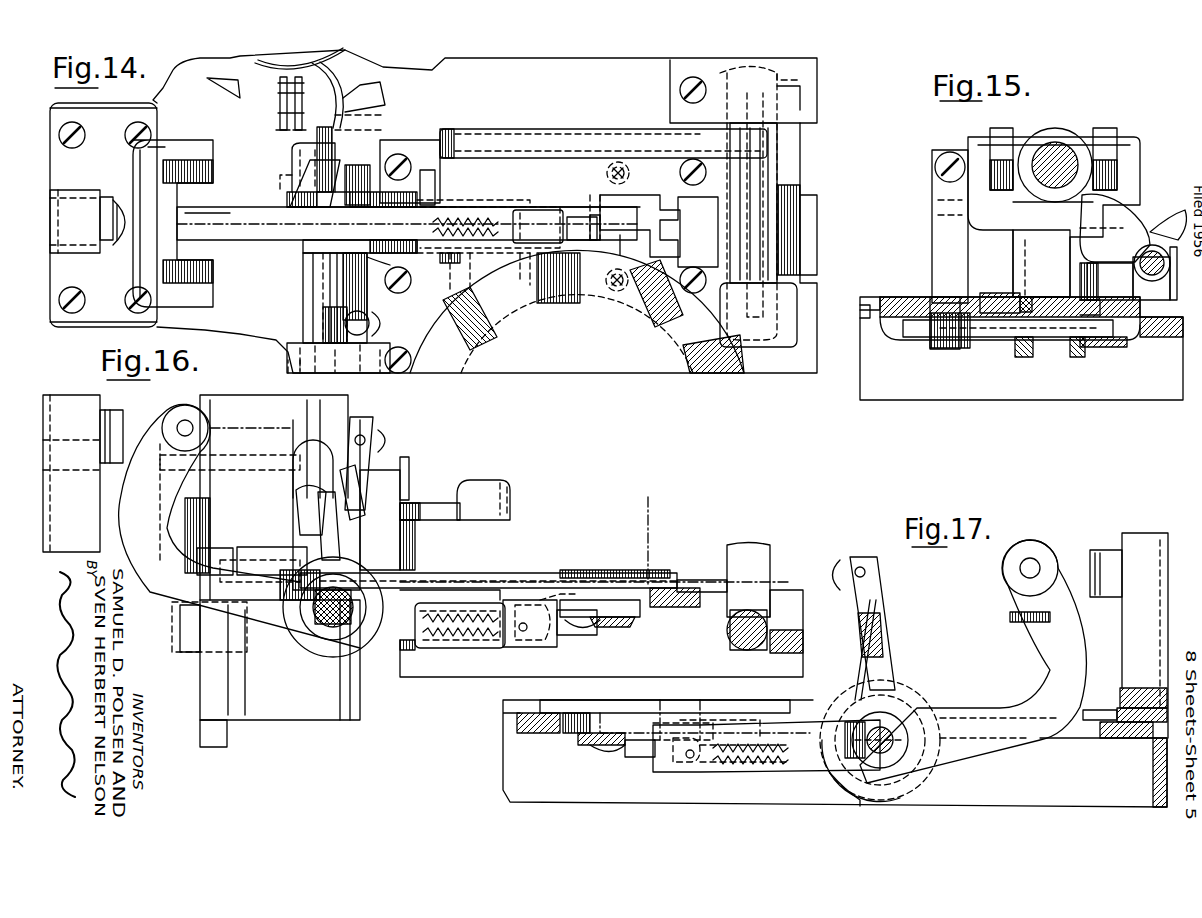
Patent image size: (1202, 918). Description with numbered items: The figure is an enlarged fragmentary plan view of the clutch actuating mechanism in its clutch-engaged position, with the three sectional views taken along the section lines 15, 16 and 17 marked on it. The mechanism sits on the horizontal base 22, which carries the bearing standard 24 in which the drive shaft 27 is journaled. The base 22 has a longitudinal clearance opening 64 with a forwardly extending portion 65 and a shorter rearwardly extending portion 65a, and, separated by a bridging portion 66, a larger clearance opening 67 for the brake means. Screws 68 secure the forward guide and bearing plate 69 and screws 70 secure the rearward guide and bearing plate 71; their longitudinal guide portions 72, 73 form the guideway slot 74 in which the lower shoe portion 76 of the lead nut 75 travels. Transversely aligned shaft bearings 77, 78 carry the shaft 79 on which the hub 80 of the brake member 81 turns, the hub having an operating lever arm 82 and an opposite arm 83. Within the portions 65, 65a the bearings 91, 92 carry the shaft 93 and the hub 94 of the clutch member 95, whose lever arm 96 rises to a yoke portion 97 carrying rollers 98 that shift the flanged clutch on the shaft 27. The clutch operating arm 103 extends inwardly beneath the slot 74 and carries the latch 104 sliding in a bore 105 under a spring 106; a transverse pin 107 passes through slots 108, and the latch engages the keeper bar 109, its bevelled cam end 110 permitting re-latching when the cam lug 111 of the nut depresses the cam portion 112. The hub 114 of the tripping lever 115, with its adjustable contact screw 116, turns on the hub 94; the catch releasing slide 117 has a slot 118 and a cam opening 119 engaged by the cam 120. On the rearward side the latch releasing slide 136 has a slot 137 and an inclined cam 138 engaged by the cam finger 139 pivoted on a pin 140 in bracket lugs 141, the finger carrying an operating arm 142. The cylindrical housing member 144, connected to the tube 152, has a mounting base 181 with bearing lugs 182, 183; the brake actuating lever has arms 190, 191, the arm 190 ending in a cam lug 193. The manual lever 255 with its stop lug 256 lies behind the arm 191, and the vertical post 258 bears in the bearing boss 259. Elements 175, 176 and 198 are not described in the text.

In FIG. 14, the section line 15— 15 is at (340, 117).
In FIG. 14, the section line 16— 16 is at (40, 252).
In FIG. 14, the section line 17— 17 is at (40, 190).
In FIG. 14, the base 22 is at (808, 106).
In FIG. 15, the base 22 is at (860, 320).
In FIG. 16, the base 22 is at (790, 615).
In FIG. 17, the base 22 is at (1115, 738).
In FIG. 14, the bearing standard 24 is at (62, 188).
In FIG. 15, the bearing standard 24 is at (1050, 130).
In FIG. 16, the bearing standard 24 is at (56, 395).
In FIG. 17, the bearing standard 24 is at (1140, 533).
In FIG. 14, the drive shaft 27 is at (108, 195).
In FIG. 15, the drive shaft 27 is at (1065, 142).
In FIG. 16, the drive shaft 27 is at (118, 420).
In FIG. 17, the drive shaft 27 is at (1100, 550).
In FIG. 14, the clearance opening 64 is at (290, 265).
In FIG. 16, the clearance opening 64 is at (642, 610).
In FIG. 14, the forwardly extending portion 65 is at (295, 334).
In FIG. 15, the forwardly extending portion 65 is at (866, 338).
In FIG. 14, the rearwardly extending portion 65a is at (290, 170).
In FIG. 15, the rearwardly extending portion 65a is at (1168, 338).
In FIG. 14, the bridging portion 66 is at (695, 232).
In FIG. 16, the bridging portion 66 is at (688, 608).
In FIG. 17, the bridging portion 66 is at (535, 733).
In FIG. 14, the clearance opening 67 is at (805, 130).
In FIG. 16, the clearance opening 67 is at (706, 578).
In FIG. 14, the screws 68 is at (412, 280).
In FIG. 14, the forward guide and bearing plate 69 is at (478, 275).
In FIG. 15, the forward guide and bearing plate 69 is at (868, 297).
In FIG. 17, the forward guide and bearing plate 69 is at (622, 700).
In FIG. 14, the screws 70 is at (455, 178).
In FIG. 14, the rearward guide and bearing plate 71 is at (432, 140).
In FIG. 15, the rearward guide and bearing plate 71 is at (1176, 275).
In FIG. 16, the rearward guide and bearing plate 71 is at (488, 573).
In FIG. 14, the longitudinal guide portion 72 is at (622, 250).
In FIG. 17, the longitudinal guide portion 72 is at (672, 710).
In FIG. 14, the longitudinal guide portion 73 is at (680, 210).
In FIG. 16, the longitudinal guide portion 73 is at (530, 572).
In FIG. 14, the guideway slot 74 is at (594, 214).
In FIG. 16, the lead nut 75 is at (648, 498).
In FIG. 16, the lower shoe portion 76 is at (602, 578).
In FIG. 14, the shaft bearing 77 is at (798, 305).
In FIG. 14, the shaft bearing 78 is at (760, 70).
In FIG. 14, the shaft 79 is at (780, 166).
In FIG. 16, the shaft 79 is at (735, 642).
In FIG. 14, the hub 80 is at (803, 183).
In FIG. 16, the hub 80 is at (748, 652).
In FIG. 14, the brake member 81 is at (659, 121).
In FIG. 16, the brake member 81 is at (779, 562).
In FIG. 14, the operating lever arm 82 is at (590, 129).
In FIG. 16, the operating lever arm 82 is at (752, 546).
In FIG. 14, the arm 83 is at (818, 233).
In FIG. 16, the arm 83 is at (782, 654).
In FIG. 14, the shaft bearing 91 is at (290, 366).
In FIG. 15, the shaft bearing 91 is at (900, 340).
In FIG. 14, the shaft bearing 92 is at (292, 147).
In FIG. 15, the shaft bearing 92 is at (1118, 347).
In FIG. 14, the shaft 93 is at (303, 288).
In FIG. 15, the shaft 93 is at (1005, 340).
In FIG. 16, the shaft 93 is at (318, 630).
In FIG. 17, the shaft 93 is at (892, 752).
In FIG. 14, the hub 94 is at (303, 304).
In FIG. 15, the hub 94 is at (972, 350).
In FIG. 16, the hub 94 is at (325, 640).
In FIG. 17, the hub 94 is at (905, 745).
In FIG. 14, the clutch member 95 is at (261, 194).
In FIG. 15, the clutch member 95 is at (1018, 272).
In FIG. 16, the clutch member 95 is at (234, 630).
In FIG. 17, the clutch member 95 is at (996, 694).
In FIG. 14, the lever arm 96 is at (243, 234).
In FIG. 15, the lever arm 96 is at (1040, 248).
In FIG. 16, the lever arm 96 is at (175, 598).
In FIG. 17, the lever arm 96 is at (1048, 682).
In FIG. 14, the yoke portion 97 is at (208, 300).
In FIG. 15, the yoke portion 97 is at (972, 140).
In FIG. 16, the yoke portion 97 is at (176, 484).
In FIG. 17, the yoke portion 97 is at (1035, 610).
In FIG. 14, the rollers 98 is at (214, 171).
In FIG. 15, the rollers 98 is at (1000, 128).
In FIG. 16, the rollers 98 is at (210, 433).
In FIG. 17, the rollers 98 is at (1010, 588).
In FIG. 14, the clutch operating arm 103 is at (445, 210).
In FIG. 16, the clutch operating arm 103 is at (445, 650).
In FIG. 17, the clutch operating arm 103 is at (663, 775).
In FIG. 14, the latch 104 is at (570, 216).
In FIG. 16, the latch 104 is at (585, 636).
In FIG. 17, the latch 104 is at (640, 760).
In FIG. 14, the bore 105 is at (432, 222).
In FIG. 16, the bore 105 is at (545, 640).
In FIG. 17, the bore 105 is at (765, 770).
In FIG. 14, the spring 106 is at (432, 232).
In FIG. 16, the spring 106 is at (472, 648).
In FIG. 17, the spring 106 is at (808, 770).
In FIG. 14, the transverse pin 107 is at (548, 212).
In FIG. 16, the transverse pin 107 is at (523, 632).
In FIG. 17, the transverse pin 107 is at (692, 760).
In FIG. 14, the slots 108 is at (505, 207).
In FIG. 16, the slots 108 is at (500, 642).
In FIG. 17, the slots 108 is at (715, 790).
In FIG. 14, the keeper bar 109 is at (590, 190).
In FIG. 16, the keeper bar 109 is at (628, 628).
In FIG. 17, the keeper bar 109 is at (580, 745).
In FIG. 16, the bevelled cam end 110 is at (585, 630).
In FIG. 17, the bevelled cam end 110 is at (615, 758).
In FIG. 16, the cam lug 111 is at (569, 597).
In FIG. 17, the cam lug 111 is at (736, 712).
In FIG. 14, the cam portion 112 is at (530, 263).
In FIG. 16, the cam portion 112 is at (508, 602).
In FIG. 17, the cam portion 112 is at (720, 727).
In FIG. 14, the hub 114 is at (365, 300).
In FIG. 15, the hub 114 is at (948, 350).
In FIG. 16, the hub 114 is at (300, 613).
In FIG. 14, the tripping lever 115 is at (372, 338).
In FIG. 15, the tripping lever 115 is at (936, 253).
In FIG. 16, the tripping lever 115 is at (375, 425).
In FIG. 17, the tripping lever 115 is at (872, 594).
In FIG. 14, the adjustable contact screw 116 is at (388, 320).
In FIG. 15, the adjustable contact screw 116 is at (938, 175).
In FIG. 16, the adjustable contact screw 116 is at (392, 440).
In FIG. 17, the adjustable contact screw 116 is at (835, 568).
In FIG. 14, the catch releasing slide 117 is at (450, 262).
In FIG. 15, the catch releasing slide 117 is at (1028, 357).
In FIG. 16, the catch releasing slide 117 is at (410, 650).
In FIG. 17, the catch releasing slide 117 is at (860, 806).
In FIG. 15, the slot 118 is at (1070, 357).
In FIG. 16, the slot 118 is at (292, 592).
In FIG. 16, the cam opening 119 is at (400, 560).
In FIG. 14, the cam 120 is at (362, 215).
In FIG. 16, the cam 120 is at (414, 540).
In FIG. 14, the latch releasing slide 136 is at (430, 190).
In FIG. 15, the latch releasing slide 136 is at (1078, 400).
In FIG. 17, the latch releasing slide 136 is at (838, 790).
In FIG. 15, the slot 137 is at (1085, 350).
In FIG. 17, the slot 137 is at (910, 745).
In FIG. 14, the inclined cam 138 is at (378, 165).
In FIG. 15, the inclined cam 138 is at (1095, 286).
In FIG. 16, the inclined cam 138 is at (290, 548).
In FIG. 17, the inclined cam 138 is at (880, 665).
In FIG. 14, the cam finger 139 is at (310, 200).
In FIG. 15, the cam finger 139 is at (1120, 212).
In FIG. 16, the cam finger 139 is at (368, 512).
In FIG. 17, the cam finger 139 is at (860, 633).
In FIG. 14, the pin 140 is at (400, 110).
In FIG. 15, the pin 140 is at (1152, 281).
In FIG. 14, the bracket lugs 141 is at (390, 92).
In FIG. 15, the bracket lugs 141 is at (1170, 270).
In FIG. 16, the bracket lugs 141 is at (440, 521).
In FIG. 14, the operating arm 142 is at (280, 105).
In FIG. 15, the operating arm 142 is at (1165, 232).
In FIG. 16, the operating arm 142 is at (296, 493).
In FIG. 16, the cylindrical housing member 144 is at (232, 393).
In FIG. 16, the cylindrical tube 152 is at (360, 700).
In FIG. 14, the arc guide 175 is at (642, 372).
In FIG. 14, the pad 176 is at (568, 300).
In FIG. 16, the mounting base 181 is at (158, 540).
In FIG. 16, the bearing lug 182 is at (412, 462).
In FIG. 16, the bearing lug 183 is at (160, 440).
In FIG. 16, the arm 190 is at (462, 482).
In FIG. 16, the arm 191 is at (250, 570).
In FIG. 16, the cam lug 193 is at (512, 486).
In FIG. 16, the housing 198 is at (311, 505).
In FIG. 16, the lever 255 is at (235, 547).
In FIG. 16, the stop lug 256 is at (210, 565).
In FIG. 16, the vertical post 258 is at (227, 738).
In FIG. 16, the bearing boss 259 is at (188, 648).